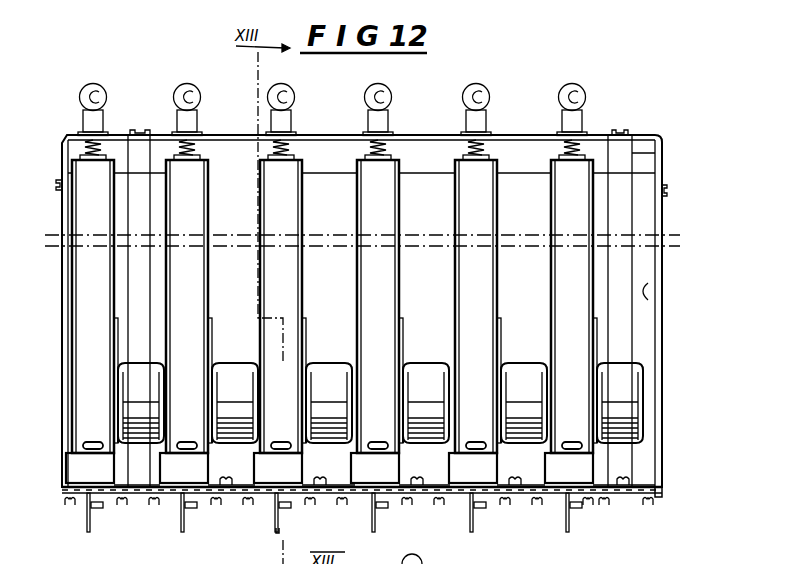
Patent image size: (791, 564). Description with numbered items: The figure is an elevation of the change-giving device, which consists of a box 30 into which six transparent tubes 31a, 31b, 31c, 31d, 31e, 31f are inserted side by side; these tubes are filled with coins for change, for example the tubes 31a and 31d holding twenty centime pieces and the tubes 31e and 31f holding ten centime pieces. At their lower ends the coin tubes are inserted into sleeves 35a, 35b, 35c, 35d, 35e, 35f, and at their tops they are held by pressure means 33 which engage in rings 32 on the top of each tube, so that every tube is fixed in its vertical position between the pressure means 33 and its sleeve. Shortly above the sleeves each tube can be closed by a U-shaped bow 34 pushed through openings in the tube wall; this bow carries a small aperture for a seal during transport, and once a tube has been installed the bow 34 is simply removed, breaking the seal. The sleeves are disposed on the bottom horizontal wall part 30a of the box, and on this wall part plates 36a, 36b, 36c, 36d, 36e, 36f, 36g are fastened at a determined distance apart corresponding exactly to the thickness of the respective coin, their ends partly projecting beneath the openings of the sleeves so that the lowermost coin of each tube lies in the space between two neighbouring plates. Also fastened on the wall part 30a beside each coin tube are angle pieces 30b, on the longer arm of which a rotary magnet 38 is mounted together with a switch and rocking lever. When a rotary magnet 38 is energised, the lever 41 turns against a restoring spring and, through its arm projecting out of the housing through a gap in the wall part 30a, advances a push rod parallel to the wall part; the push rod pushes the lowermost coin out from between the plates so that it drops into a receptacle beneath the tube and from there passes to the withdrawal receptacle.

The box 30 is at (60, 131).
The bottom horizontal wall part 30a is at (656, 497).
The angle piece 30b is at (307, 339).
The transparent tube 31a is at (93, 306).
The transparent tube 31b is at (187, 306).
The transparent tube 31c is at (281, 306).
The transparent tube 31d is at (378, 306).
The transparent tube 31e is at (476, 306).
The transparent tube 31f is at (572, 306).
The ring 32 is at (385, 157).
The pressure means 33 is at (391, 93).
The U-shaped bow 34 is at (377, 442).
The sleeve 35a is at (90, 468).
The sleeve 35b is at (184, 468).
The sleeve 35c is at (278, 468).
The sleeve 35d is at (375, 468).
The sleeve 35e is at (473, 468).
The sleeve 35f is at (569, 468).
The plate 36a is at (64, 492).
The plate 36b is at (133, 494).
The plate 36c is at (228, 497).
The plate 36d is at (327, 497).
The plate 36e is at (425, 497).
The plate 36f is at (518, 497).
The plate 36g is at (606, 502).
The rotary magnet 38 is at (430, 378).
The lever 41 is at (277, 531).